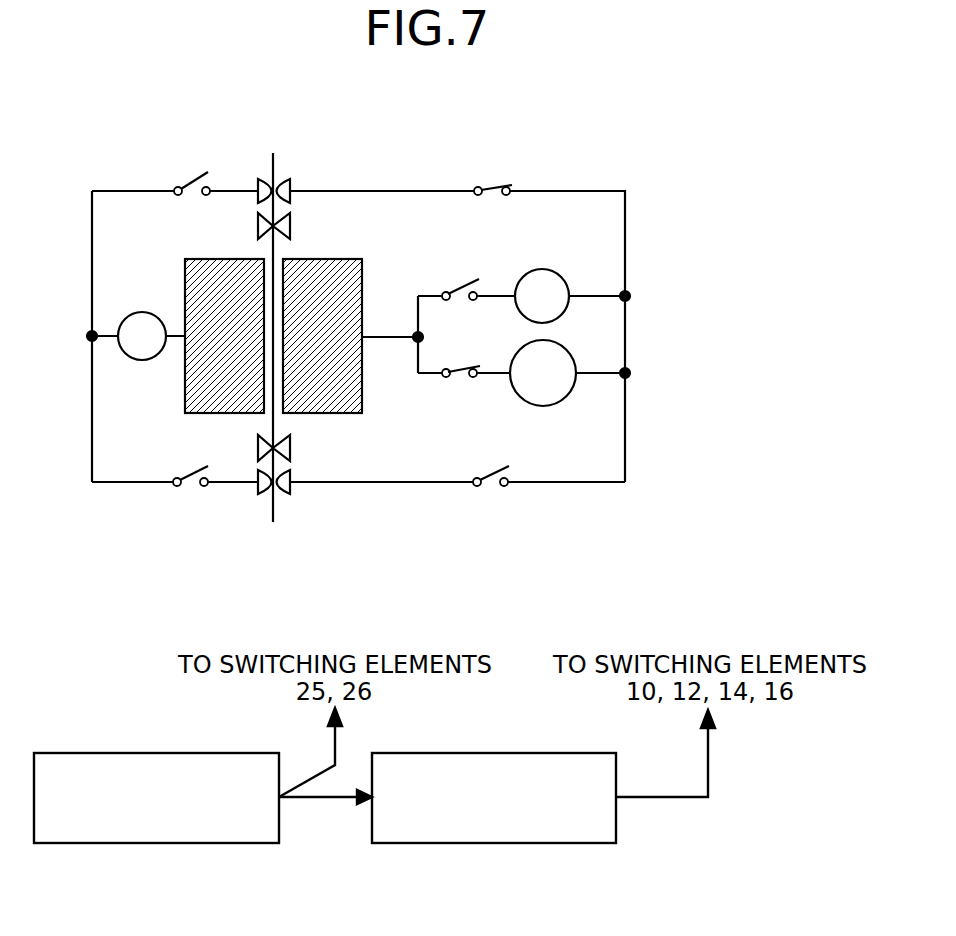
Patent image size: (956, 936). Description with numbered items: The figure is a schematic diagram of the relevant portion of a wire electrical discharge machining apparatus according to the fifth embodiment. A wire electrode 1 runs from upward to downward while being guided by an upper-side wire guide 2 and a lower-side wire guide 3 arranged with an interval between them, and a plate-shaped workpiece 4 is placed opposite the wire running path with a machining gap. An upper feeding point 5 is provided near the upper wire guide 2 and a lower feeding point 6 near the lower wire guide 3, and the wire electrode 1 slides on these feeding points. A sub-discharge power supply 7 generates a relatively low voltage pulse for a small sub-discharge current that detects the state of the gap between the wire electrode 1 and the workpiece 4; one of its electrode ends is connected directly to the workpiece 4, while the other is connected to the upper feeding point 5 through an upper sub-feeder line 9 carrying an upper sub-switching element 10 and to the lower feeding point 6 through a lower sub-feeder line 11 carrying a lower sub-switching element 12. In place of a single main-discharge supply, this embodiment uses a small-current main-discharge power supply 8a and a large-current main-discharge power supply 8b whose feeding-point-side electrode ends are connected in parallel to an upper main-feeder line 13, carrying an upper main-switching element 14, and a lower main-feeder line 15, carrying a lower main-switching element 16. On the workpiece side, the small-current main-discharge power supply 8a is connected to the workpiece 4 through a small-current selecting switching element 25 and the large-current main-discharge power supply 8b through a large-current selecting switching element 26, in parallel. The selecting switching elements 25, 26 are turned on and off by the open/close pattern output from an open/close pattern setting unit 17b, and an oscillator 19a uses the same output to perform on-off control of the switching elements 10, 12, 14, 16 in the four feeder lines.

The wire electrode 1 is at (274, 162).
The upper-side wire guide 2 is at (291, 230).
The lower-side wire guide 3 is at (291, 444).
The workpiece 4 is at (362, 397).
The upper feeding point 5 is at (291, 186).
The lower feeding point 6 is at (291, 487).
The sub-discharge power supply 7 is at (146, 360).
The small-current main-discharge power supply 8a is at (550, 270).
The large-current main-discharge power supply 8b is at (548, 406).
The upper sub-feeder line 9 is at (113, 191).
The upper sub-switching element 10 is at (193, 176).
The lower sub-feeder line 11 is at (113, 482).
The lower sub-switching element 12 is at (178, 487).
The upper main-feeder line 13 is at (408, 191).
The upper main-switching element 14 is at (509, 187).
The lower main-feeder line 15 is at (371, 482).
The lower main-switching element 16 is at (477, 487).
The small-current selecting switching element 25 is at (462, 282).
The large-current selecting switching element 26 is at (455, 377).
The open/close pattern setting unit 17b is at (246, 843).
The oscillator 19a is at (577, 843).